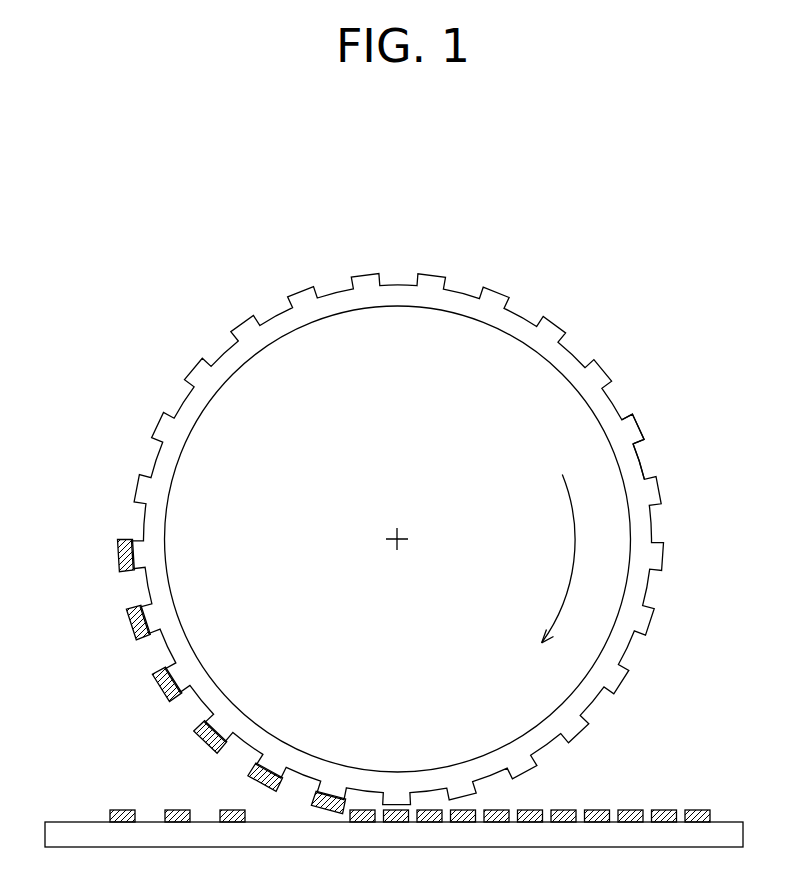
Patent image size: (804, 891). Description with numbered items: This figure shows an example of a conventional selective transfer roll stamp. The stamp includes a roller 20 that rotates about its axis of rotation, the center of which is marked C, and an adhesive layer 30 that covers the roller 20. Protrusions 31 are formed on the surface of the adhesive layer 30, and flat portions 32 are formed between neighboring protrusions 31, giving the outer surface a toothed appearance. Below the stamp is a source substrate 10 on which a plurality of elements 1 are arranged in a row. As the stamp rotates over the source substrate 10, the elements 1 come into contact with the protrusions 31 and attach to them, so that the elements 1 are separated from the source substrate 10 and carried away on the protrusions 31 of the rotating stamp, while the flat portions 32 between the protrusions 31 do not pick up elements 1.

The element 1 is at (128, 618).
The source substrate 10 is at (732, 828).
The roller 20 is at (516, 390).
The adhesive layer 30 is at (602, 403).
The protrusion 31 is at (632, 428).
The flat portion 32 is at (643, 458).
The rotation center C is at (402, 535).